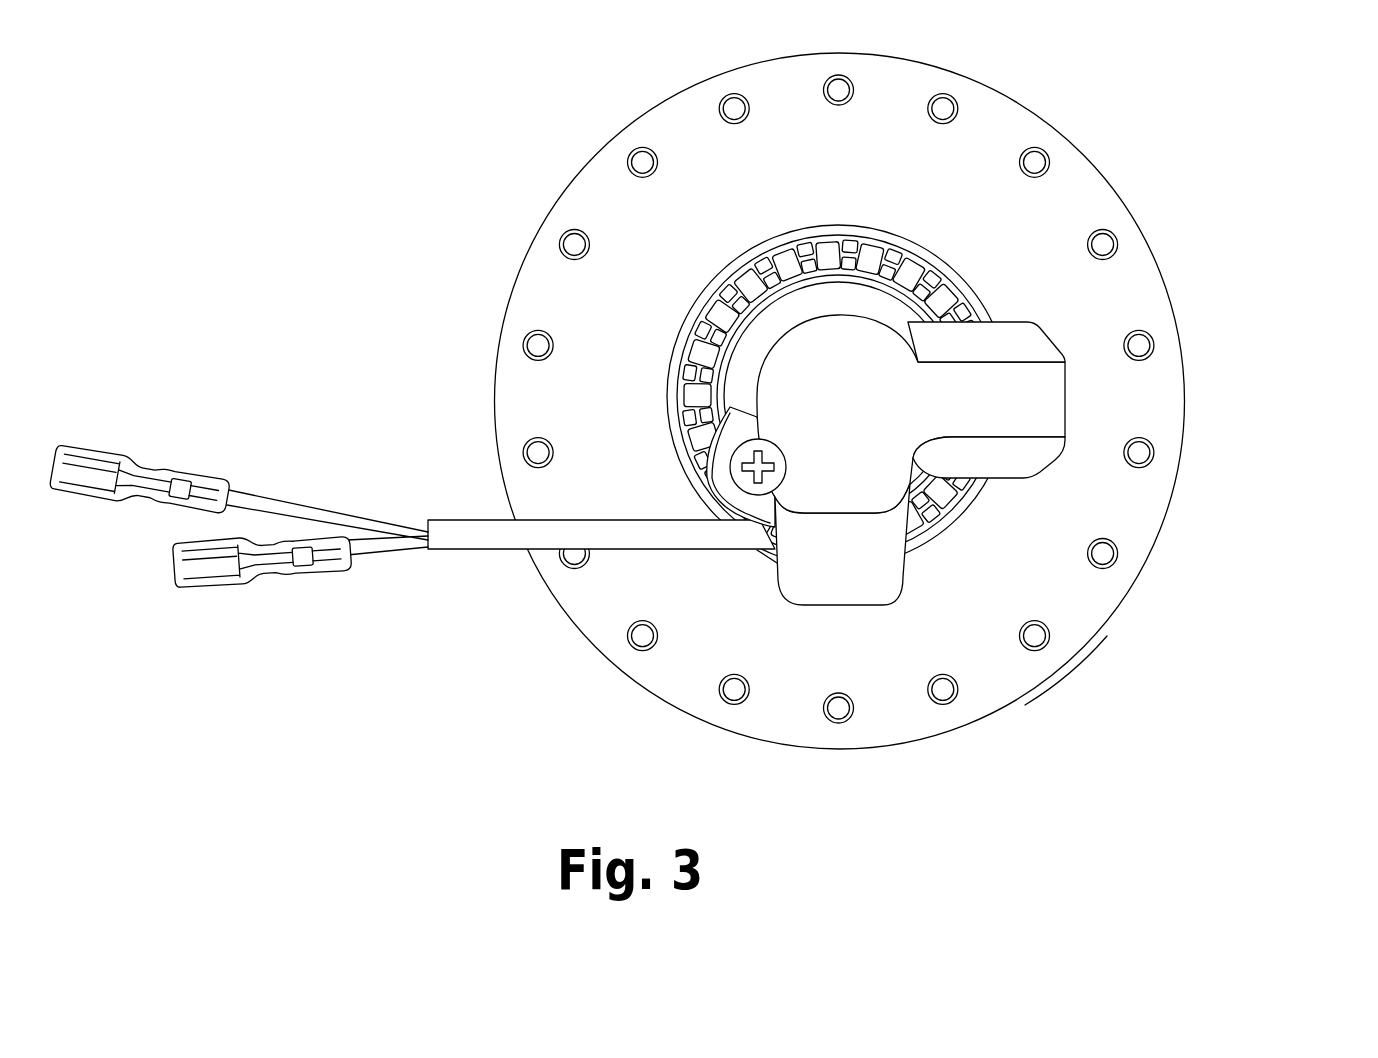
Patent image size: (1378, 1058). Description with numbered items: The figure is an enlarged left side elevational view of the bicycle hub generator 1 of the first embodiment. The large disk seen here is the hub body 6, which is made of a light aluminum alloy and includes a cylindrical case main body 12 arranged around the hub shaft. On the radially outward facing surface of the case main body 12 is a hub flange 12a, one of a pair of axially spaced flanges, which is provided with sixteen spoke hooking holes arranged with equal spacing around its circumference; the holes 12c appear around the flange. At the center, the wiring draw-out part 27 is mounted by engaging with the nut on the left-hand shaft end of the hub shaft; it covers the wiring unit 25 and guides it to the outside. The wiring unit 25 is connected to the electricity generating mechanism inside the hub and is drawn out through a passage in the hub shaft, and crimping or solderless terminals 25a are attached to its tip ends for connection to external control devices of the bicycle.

The bicycle hub generator 1 is at (707, 439).
The hub body 6 is at (1107, 374).
The case main body 12 is at (882, 439).
The hub flange 12a is at (1075, 635).
The spoke holes 12c is at (1104, 555).
The wiring unit 25 is at (413, 532).
The crimping or solderless terminals 25a is at (143, 457).
The wiring draw-out part 27 is at (1022, 387).